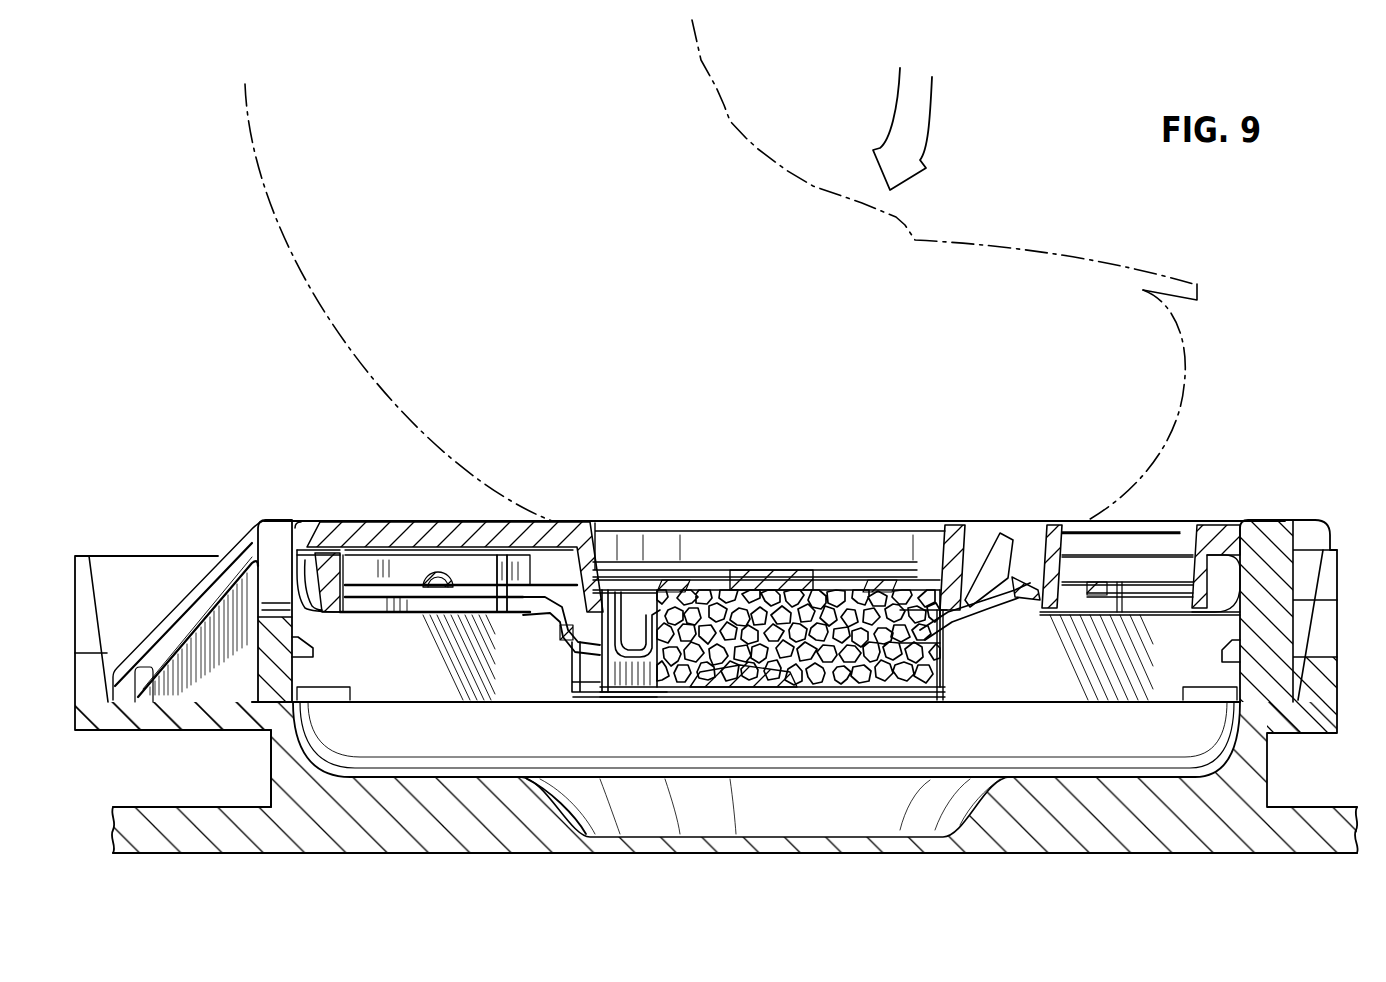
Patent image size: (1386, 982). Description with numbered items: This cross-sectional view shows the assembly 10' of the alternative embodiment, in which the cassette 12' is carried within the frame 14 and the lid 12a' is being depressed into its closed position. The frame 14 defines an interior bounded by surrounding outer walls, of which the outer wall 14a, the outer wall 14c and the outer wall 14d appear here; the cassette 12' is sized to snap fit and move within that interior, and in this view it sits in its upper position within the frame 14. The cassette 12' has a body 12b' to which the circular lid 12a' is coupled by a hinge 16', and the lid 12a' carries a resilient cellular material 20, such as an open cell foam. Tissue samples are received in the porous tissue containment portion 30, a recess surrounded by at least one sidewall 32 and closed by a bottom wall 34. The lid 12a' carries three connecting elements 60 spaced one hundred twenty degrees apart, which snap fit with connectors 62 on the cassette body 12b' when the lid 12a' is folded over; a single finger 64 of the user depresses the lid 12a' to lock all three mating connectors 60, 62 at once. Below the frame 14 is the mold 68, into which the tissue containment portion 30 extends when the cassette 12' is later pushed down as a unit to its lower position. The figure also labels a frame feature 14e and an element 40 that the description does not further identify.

The assembly 10' is at (1223, 445).
The cassette 12' is at (487, 583).
The lid 12a' is at (769, 533).
The cassette body 12b' is at (509, 535).
The frame 14 is at (1277, 521).
The outer wall 14a is at (177, 603).
The outer wall 14c is at (1295, 600).
The outer wall 14d is at (512, 657).
The housing liner 14e is at (382, 702).
The hinge 16' is at (310, 541).
The resilient cellular material 20 is at (838, 610).
The porous tissue containment portion 30 is at (590, 662).
The sidewall 32 is at (940, 660).
The bottom wall 34 is at (810, 690).
The cushion block 40 is at (730, 668).
The connecting elements 60 is at (1045, 602).
The connectors 62 is at (1017, 545).
The finger 64 is at (1000, 252).
The mold 68 is at (271, 769).